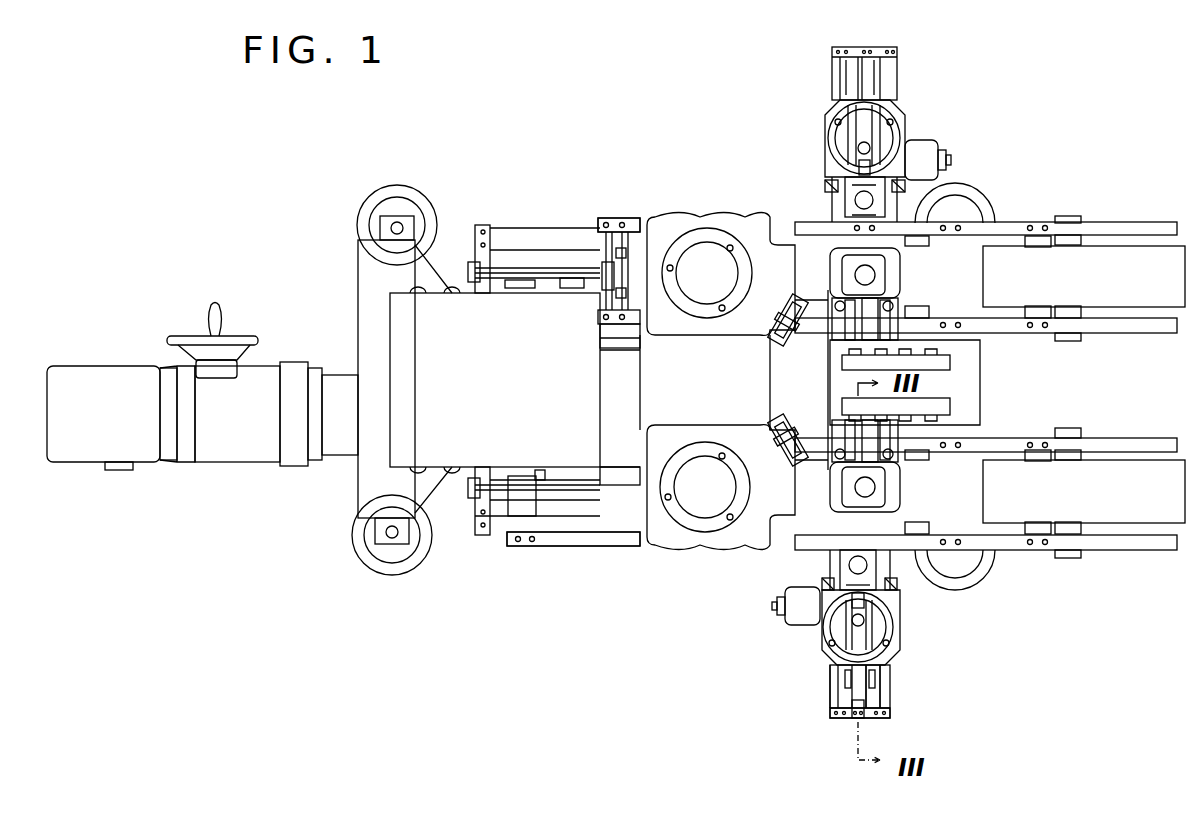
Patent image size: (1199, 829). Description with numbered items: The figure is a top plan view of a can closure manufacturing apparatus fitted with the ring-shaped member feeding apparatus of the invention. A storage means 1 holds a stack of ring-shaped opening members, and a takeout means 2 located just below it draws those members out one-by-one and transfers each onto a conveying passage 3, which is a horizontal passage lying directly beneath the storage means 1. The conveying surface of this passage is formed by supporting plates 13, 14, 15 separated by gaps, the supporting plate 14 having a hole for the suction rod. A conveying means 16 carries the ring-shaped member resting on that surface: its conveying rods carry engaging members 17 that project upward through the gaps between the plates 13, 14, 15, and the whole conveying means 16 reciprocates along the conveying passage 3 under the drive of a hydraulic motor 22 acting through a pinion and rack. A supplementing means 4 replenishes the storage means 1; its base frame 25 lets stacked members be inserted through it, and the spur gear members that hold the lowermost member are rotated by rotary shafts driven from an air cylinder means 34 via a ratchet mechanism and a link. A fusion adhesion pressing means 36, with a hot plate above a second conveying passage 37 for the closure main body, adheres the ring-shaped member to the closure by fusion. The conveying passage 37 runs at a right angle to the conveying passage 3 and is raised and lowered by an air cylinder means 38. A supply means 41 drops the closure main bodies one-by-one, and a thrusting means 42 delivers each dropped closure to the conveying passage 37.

The storage means 1 is at (909, 92).
The takeout means 2 is at (858, 132).
The conveying passage 3 is at (876, 130).
The supplementing means 4 is at (825, 179).
The supporting plate 13 is at (835, 700).
The supporting plate 14 is at (858, 714).
The supporting plate 15 is at (887, 712).
The conveying means 16 is at (876, 695).
The engaging members 17 is at (868, 695).
The hydraulic motor 22 is at (930, 160).
The base frame 25 is at (831, 183).
The air cylinder means 34 is at (880, 207).
The fusion adhesion pressing means 36 is at (912, 279).
The conveying passage 37 is at (815, 308).
The air cylinder means 38 is at (832, 255).
The supply means 41 is at (700, 240).
The thrusting means 42 is at (630, 222).